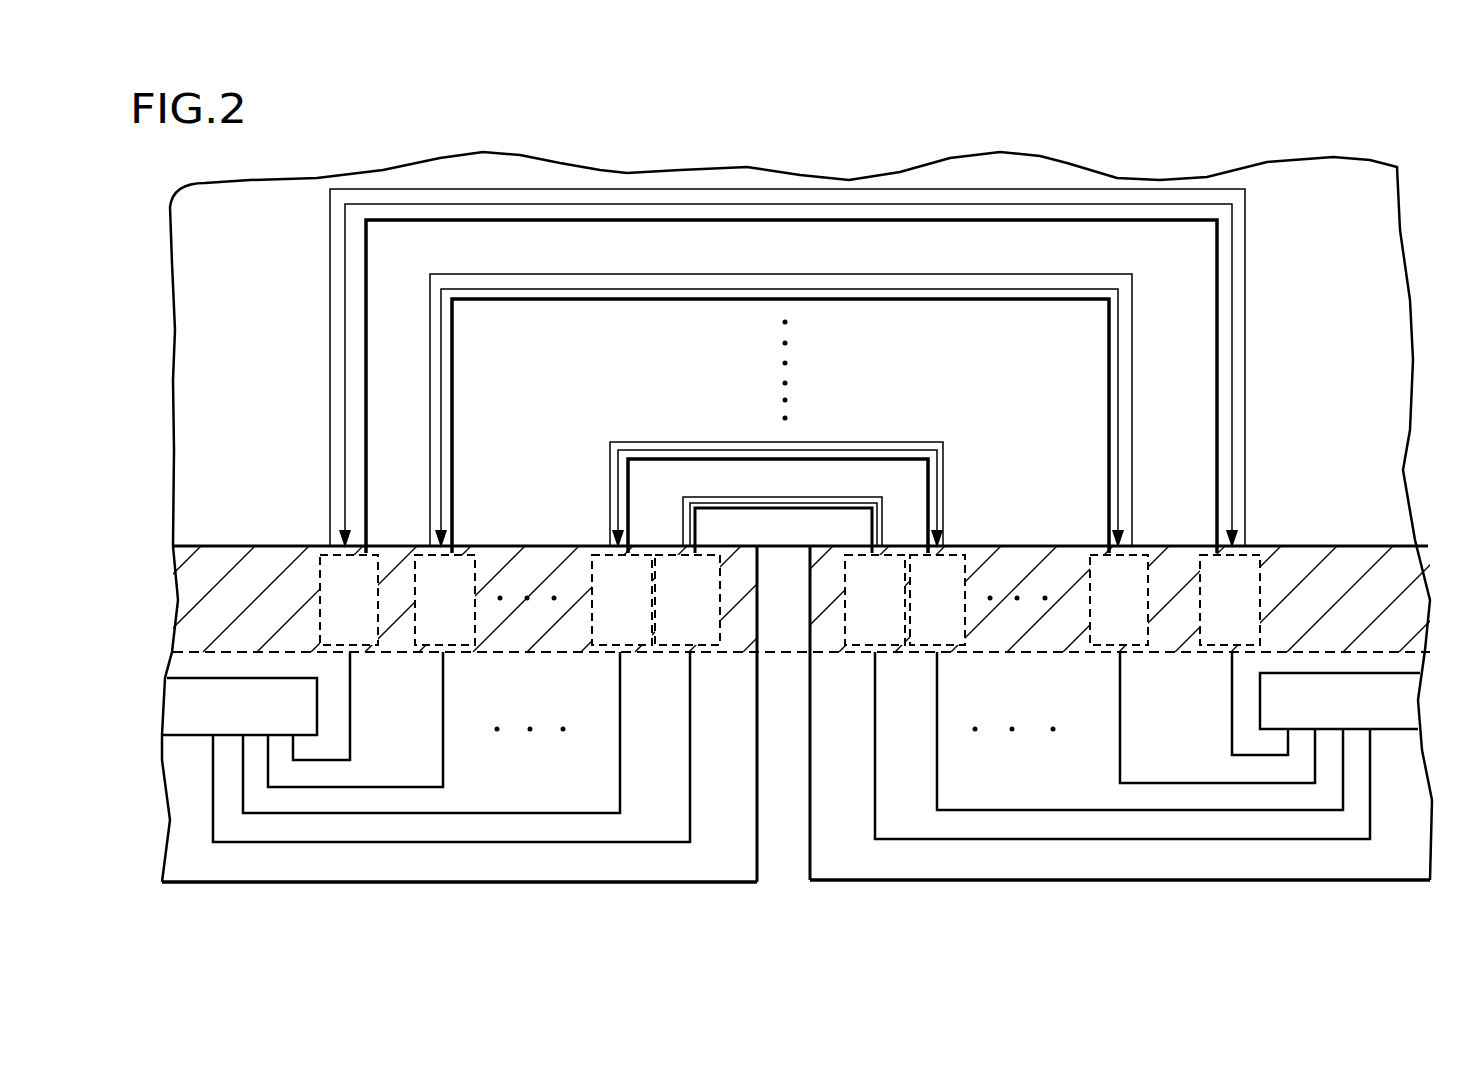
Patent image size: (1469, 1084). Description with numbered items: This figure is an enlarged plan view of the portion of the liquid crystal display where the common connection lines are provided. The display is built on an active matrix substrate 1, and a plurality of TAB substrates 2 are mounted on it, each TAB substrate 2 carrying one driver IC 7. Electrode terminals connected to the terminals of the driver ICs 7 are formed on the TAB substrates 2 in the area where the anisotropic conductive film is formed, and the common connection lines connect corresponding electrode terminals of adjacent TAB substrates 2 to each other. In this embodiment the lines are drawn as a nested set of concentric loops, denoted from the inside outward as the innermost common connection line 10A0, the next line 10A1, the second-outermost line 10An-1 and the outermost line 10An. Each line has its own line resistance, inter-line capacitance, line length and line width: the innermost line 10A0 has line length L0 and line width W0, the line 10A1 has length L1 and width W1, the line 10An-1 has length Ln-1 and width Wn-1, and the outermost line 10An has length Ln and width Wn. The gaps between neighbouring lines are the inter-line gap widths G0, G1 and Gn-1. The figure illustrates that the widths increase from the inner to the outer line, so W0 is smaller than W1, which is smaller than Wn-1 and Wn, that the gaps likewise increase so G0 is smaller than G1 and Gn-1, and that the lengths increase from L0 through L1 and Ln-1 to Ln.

The active matrix substrate 1 is at (1378, 443).
The TAB substrate 2 is at (808, 886).
The driver IC 7 is at (187, 702).
The common connection line 10An is at (345, 263).
The common connection line 10An-1 is at (440, 345).
The common connection line 10A1 is at (612, 452).
The common connection line 10A0 is at (683, 521).
The line width Wn is at (849, 255).
The line width Wn-1 is at (872, 328).
The line width W1 is at (900, 487).
The line width W0 is at (811, 533).
The inter-line gap width Gn-1 is at (610, 222).
The inter-line gap width G1 is at (726, 390).
The inter-line gap width G0 is at (726, 460).
The line length L0 is at (693, 525).
The line length L1 is at (943, 474).
The line length Ln-1 is at (1120, 377).
The line length Ln is at (1233, 393).